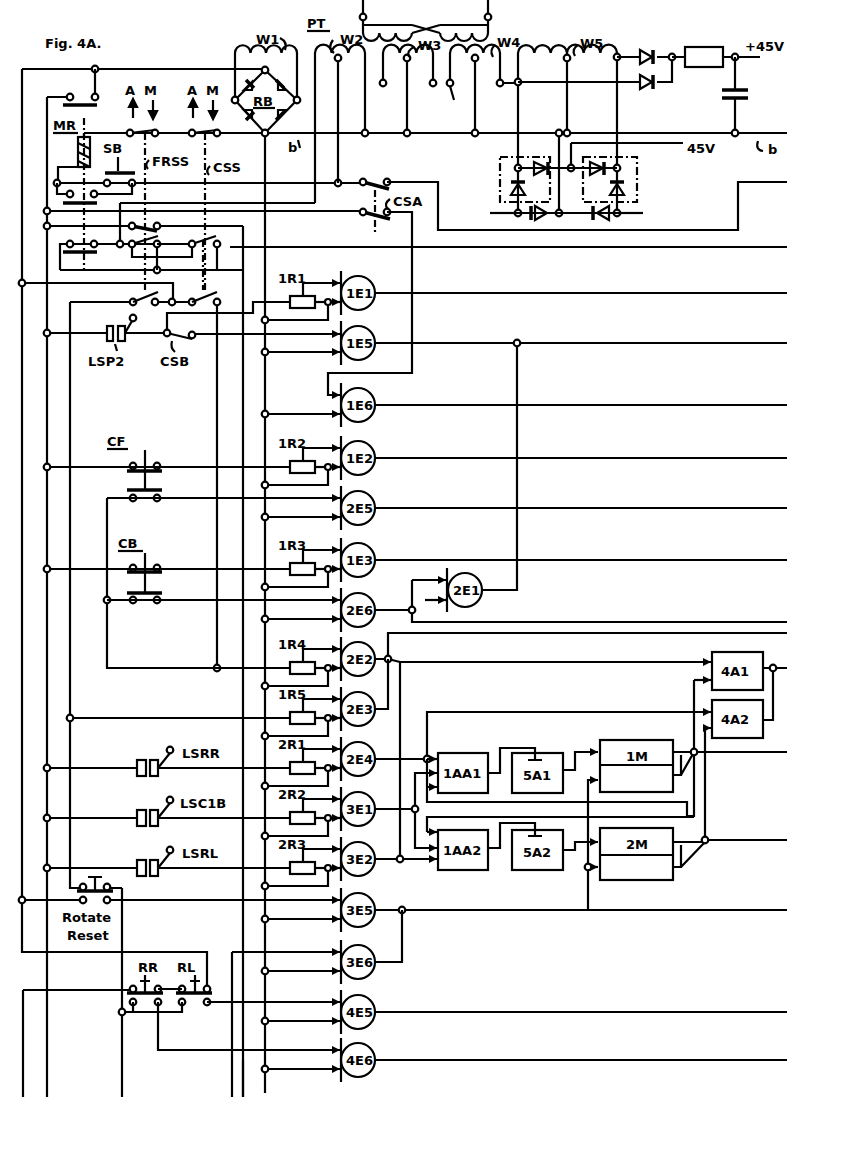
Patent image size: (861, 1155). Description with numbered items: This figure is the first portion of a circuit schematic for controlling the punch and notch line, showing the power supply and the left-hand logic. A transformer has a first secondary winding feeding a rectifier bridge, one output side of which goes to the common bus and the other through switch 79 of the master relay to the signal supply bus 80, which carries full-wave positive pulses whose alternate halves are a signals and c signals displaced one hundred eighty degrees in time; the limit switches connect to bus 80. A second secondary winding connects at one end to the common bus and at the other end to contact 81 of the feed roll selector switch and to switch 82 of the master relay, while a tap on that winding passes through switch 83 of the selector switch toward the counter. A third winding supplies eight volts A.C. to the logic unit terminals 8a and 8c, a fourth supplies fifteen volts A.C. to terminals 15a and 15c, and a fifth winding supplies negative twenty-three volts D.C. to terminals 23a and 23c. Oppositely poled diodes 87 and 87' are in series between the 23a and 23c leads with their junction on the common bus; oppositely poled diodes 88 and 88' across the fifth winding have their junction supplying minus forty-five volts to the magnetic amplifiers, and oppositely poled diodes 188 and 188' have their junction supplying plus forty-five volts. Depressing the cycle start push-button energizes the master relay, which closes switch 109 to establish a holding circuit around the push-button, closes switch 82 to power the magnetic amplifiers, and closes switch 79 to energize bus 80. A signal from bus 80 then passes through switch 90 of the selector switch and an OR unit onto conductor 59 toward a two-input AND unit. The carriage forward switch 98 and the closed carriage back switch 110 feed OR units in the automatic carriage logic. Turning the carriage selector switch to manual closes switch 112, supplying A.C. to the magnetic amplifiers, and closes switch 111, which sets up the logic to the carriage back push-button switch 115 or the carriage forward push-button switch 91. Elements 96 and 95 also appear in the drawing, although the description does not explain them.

The switch of master relay 79 is at (80, 97).
The signal supply bus 80 is at (47, 168).
The switch of master relay 109 is at (64, 201).
The switch of master relay 82 is at (97, 254).
The switch contact 96 is at (186, 234).
The contact of feed roll selector switch 81 is at (160, 253).
The switch of carriage selector switch 112 is at (216, 250).
The switch of carriage selector switch 111 is at (215, 298).
The carriage forward switch 98 is at (153, 466).
The carriage forward push-button switch 91 is at (143, 500).
The carriage back switch 110 is at (153, 570).
The carriage back push-button switch 115 is at (143, 603).
The switch of selector switch CSA 83 is at (381, 183).
The switch of selector switch CSA 90 is at (371, 218).
The diode 188 is at (595, 87).
The diode 188' is at (644, 45).
The diode 88 is at (535, 170).
The diode 88' is at (619, 178).
The diode 87 is at (529, 220).
The diode 87' is at (602, 220).
The terminal of logic units 23c is at (490, 213).
The terminal of logic units 23a is at (643, 213).
The conductor 59 is at (773, 405).
The conductor 95 is at (246, 1076).
The terminal of logic units 8a is at (381, 81).
The terminal of logic units 8c is at (426, 81).
The terminal of logic units 15a is at (449, 89).
The terminal of logic units 15c is at (500, 81).